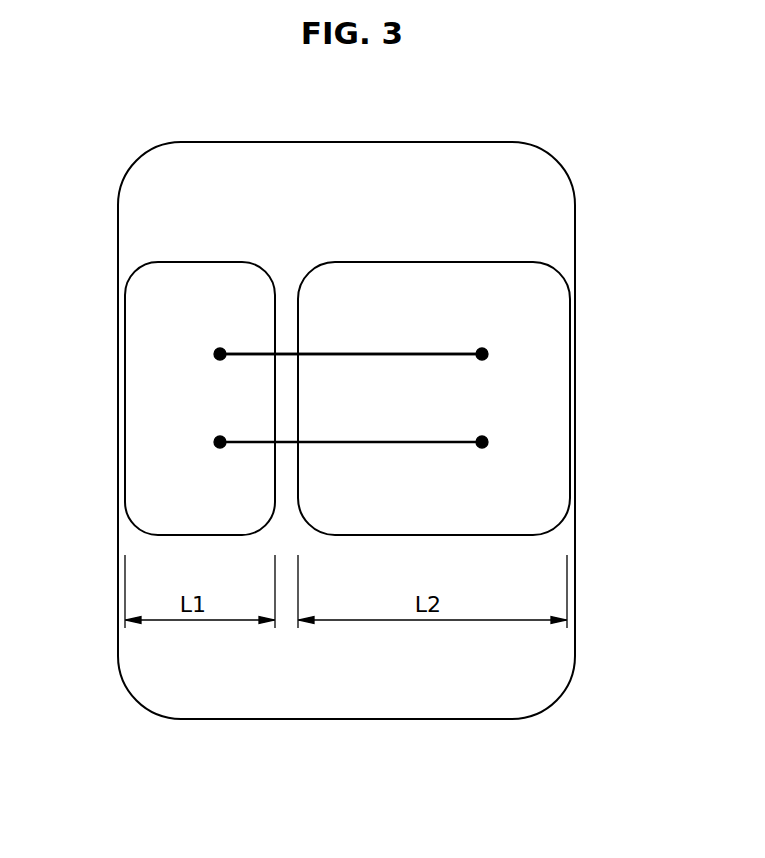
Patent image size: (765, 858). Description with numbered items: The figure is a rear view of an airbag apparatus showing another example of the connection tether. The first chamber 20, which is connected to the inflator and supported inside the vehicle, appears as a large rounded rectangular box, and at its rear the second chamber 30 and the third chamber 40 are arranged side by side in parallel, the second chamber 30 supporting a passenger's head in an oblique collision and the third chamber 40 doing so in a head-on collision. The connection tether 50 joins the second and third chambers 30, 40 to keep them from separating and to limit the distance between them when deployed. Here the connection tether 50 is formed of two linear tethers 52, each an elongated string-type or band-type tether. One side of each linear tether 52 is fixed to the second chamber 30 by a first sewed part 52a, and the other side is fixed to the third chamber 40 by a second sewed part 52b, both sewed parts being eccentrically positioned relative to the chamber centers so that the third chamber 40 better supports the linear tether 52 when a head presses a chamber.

The first chamber 20 is at (565, 172).
The second chamber 30 is at (163, 432).
The third chamber 40 is at (535, 413).
The connection tether 50 is at (388, 328).
The linear tether 52 is at (456, 354).
The first sewed part 52a is at (220, 354).
The second sewed part 52b is at (482, 354).